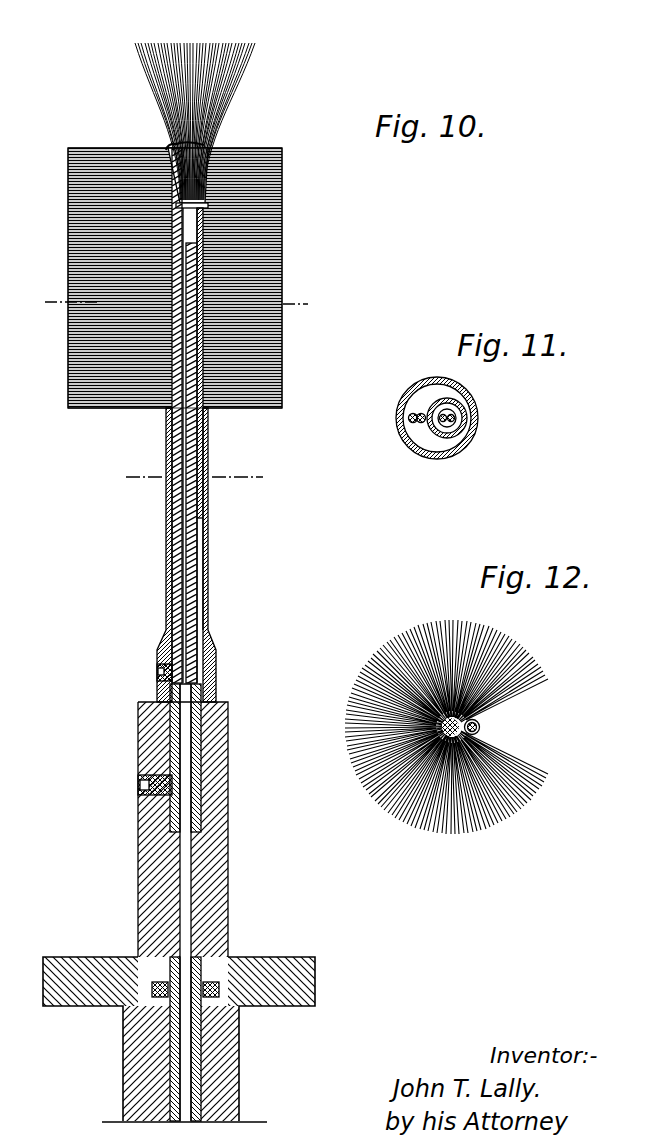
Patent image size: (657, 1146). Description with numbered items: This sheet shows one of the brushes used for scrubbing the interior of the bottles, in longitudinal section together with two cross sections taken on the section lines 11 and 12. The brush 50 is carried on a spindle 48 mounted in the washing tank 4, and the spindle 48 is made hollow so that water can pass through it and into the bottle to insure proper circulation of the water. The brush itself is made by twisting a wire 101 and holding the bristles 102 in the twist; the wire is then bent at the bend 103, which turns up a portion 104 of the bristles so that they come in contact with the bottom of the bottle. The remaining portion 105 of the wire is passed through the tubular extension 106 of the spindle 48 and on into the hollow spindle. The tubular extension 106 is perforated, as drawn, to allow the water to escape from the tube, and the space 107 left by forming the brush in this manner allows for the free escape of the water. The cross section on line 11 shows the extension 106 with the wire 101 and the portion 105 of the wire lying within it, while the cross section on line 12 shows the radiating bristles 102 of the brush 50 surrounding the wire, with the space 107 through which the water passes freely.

In FIG. 10, the washing tank 4 is at (179, 1029).
In FIG. 10, the section line 11— 11 is at (195, 479).
In FIG. 10, the section line 12— 12 is at (175, 300).
In FIG. 10, the spindle 48 is at (161, 415).
In FIG. 11, the spindle 48 is at (422, 447).
In FIG. 10, the brush 50 is at (159, 278).
In FIG. 12, the brush 50 is at (548, 672).
In FIG. 10, the wire 101 is at (170, 588).
In FIG. 11, the wire 101 is at (413, 432).
In FIG. 10, the bristles 102 is at (157, 278).
In FIG. 10, the bend of the wire 103 is at (168, 148).
In FIG. 10, the turned-up portion of the bristles 104 is at (200, 121).
In FIG. 10, the portion of the wire 105 is at (197, 559).
In FIG. 11, the portion of the wire 105 is at (462, 412).
In FIG. 12, the portion of the wire 105 is at (479, 722).
In FIG. 10, the tubular extension 106 is at (204, 398).
In FIG. 11, the tubular extension 106 is at (448, 445).
In FIG. 12, the tubular extension 106 is at (478, 733).
In FIG. 12, the space 107 is at (502, 727).